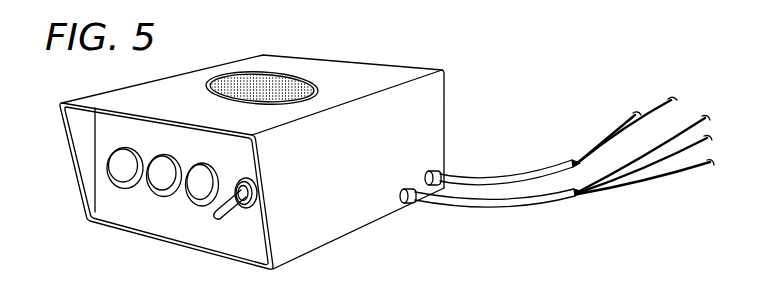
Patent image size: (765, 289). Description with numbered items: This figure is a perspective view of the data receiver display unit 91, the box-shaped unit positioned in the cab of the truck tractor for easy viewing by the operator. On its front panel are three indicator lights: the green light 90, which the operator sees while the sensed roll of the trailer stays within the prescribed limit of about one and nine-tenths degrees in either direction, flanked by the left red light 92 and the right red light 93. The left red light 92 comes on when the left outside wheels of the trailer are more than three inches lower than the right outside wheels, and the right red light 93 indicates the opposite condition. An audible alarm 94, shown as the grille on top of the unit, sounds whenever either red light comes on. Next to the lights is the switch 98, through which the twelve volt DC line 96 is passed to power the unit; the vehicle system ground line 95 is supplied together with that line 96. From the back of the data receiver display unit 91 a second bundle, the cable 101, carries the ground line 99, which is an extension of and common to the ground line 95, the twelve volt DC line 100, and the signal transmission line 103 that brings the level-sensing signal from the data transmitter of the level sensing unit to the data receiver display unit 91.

The green light 90 is at (152, 185).
The data receiver display unit 91 is at (460, 112).
The left red light 92 is at (113, 177).
The right red light 93 is at (195, 195).
The audible alarm 94 is at (302, 84).
The vehicle system ground line 95 is at (663, 110).
The +12 volt DC line 96 is at (616, 131).
The switch 98 is at (233, 216).
The ground line 99 is at (655, 178).
The +12 volt DC line 100 is at (695, 152).
The cable 101 is at (460, 206).
The signal transmission line 103 is at (683, 128).